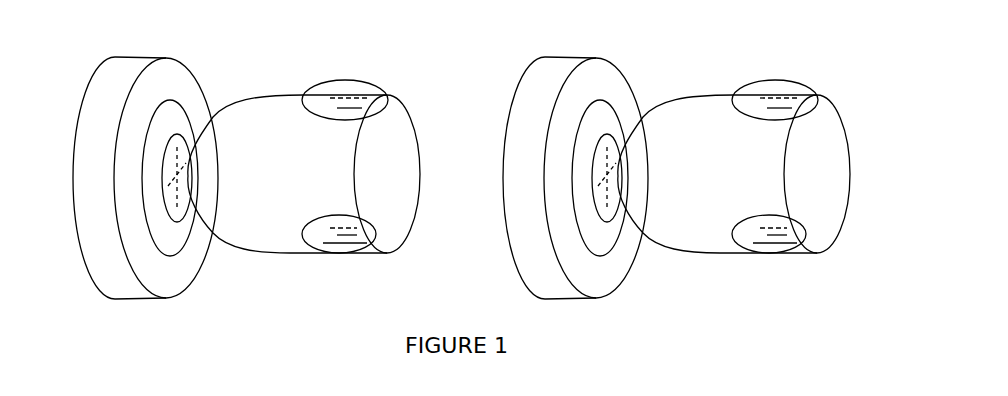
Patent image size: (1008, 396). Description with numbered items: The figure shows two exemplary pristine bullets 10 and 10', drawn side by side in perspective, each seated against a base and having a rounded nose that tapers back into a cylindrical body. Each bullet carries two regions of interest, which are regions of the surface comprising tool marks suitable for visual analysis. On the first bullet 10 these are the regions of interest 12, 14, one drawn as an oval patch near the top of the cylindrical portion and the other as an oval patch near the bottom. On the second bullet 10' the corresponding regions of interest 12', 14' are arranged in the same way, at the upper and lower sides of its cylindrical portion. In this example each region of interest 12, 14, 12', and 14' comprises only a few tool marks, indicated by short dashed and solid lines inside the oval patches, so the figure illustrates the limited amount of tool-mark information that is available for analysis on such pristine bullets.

The pristine bullet 10 is at (304, 139).
The region of interest 12 is at (382, 73).
The region of interest 14 is at (339, 255).
The pristine bullet 10' is at (734, 139).
The region of interest 12' is at (815, 73).
The region of interest 14' is at (778, 256).